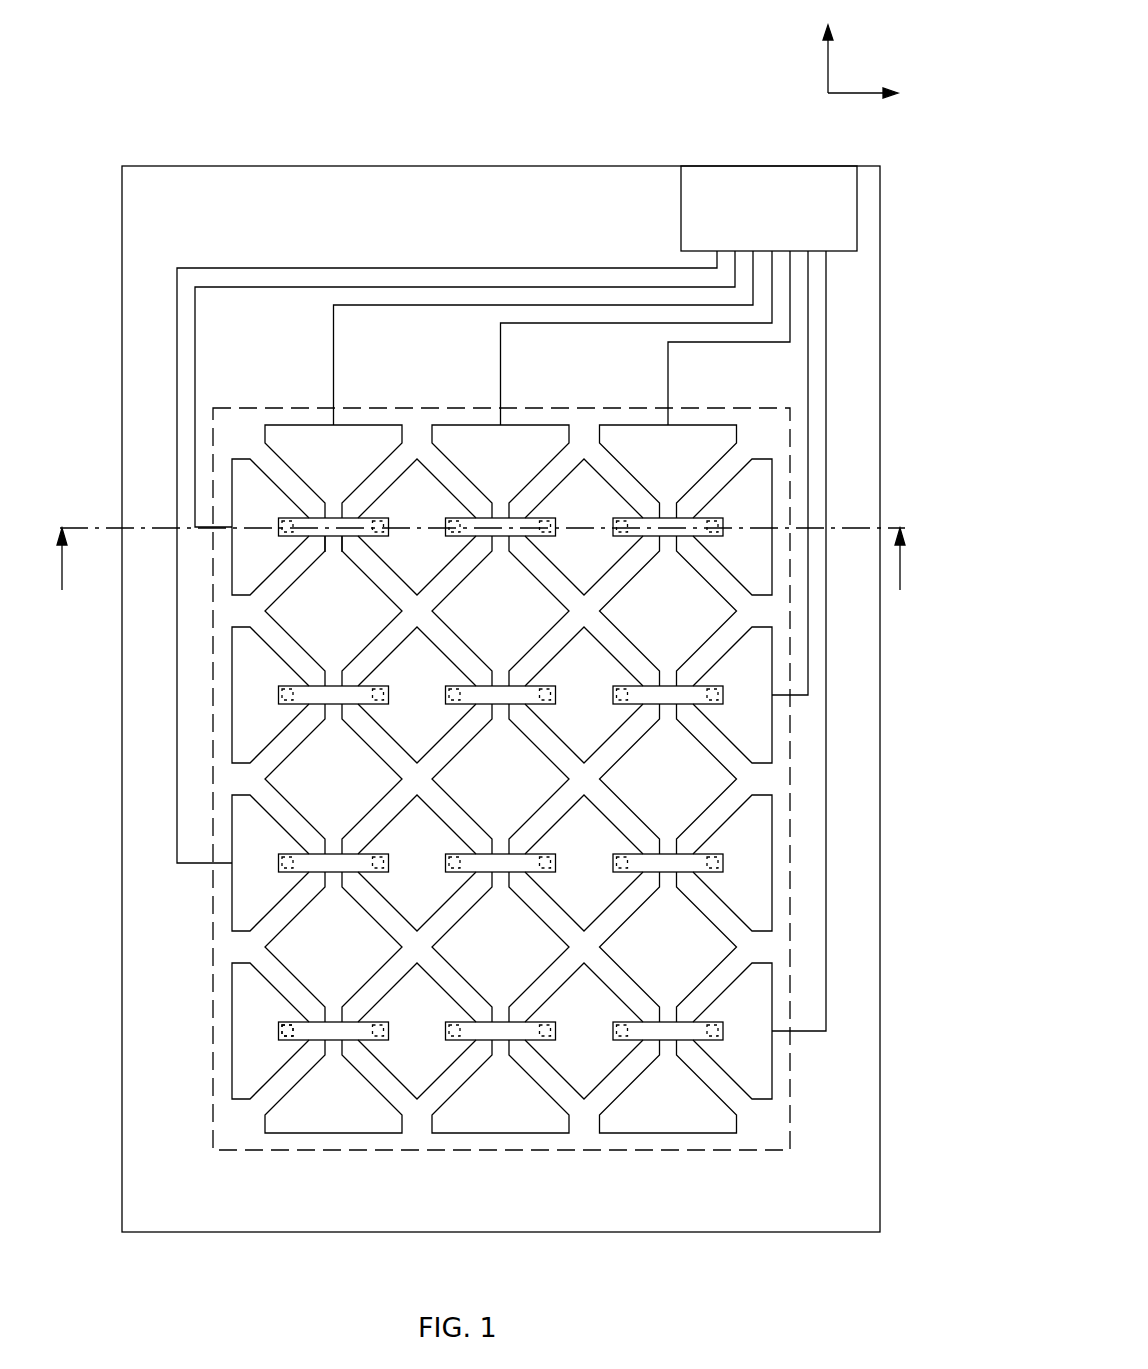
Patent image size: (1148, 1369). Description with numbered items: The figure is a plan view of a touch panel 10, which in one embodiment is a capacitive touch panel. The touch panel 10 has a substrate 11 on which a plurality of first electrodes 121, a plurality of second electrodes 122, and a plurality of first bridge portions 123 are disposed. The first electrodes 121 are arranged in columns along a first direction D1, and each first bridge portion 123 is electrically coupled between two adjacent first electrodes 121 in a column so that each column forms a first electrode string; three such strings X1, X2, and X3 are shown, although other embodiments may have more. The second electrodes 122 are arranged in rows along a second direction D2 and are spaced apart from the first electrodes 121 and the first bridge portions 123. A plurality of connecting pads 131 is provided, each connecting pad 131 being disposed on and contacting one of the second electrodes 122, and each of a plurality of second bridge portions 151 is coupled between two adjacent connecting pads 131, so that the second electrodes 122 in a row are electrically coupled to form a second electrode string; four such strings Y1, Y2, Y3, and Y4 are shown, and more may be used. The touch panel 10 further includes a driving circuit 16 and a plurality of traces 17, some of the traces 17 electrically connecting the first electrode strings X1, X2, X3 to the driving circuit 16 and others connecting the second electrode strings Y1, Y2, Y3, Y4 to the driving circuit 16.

The touch panel 10 is at (383, 78).
The substrate 11 is at (148, 228).
The driving circuit 16 is at (762, 190).
The traces 17 is at (193, 338).
The first electrodes 121 is at (417, 768).
The second electrodes 122 is at (583, 768).
The first bridge portions 123 is at (330, 540).
The connecting pads 131 is at (279, 1024).
The second bridge portions 151 is at (682, 1030).
The first electrode string X1 is at (326, 1103).
The first electrode string X2 is at (492, 1103).
The first electrode string X3 is at (660, 1103).
The second electrode string Y1 is at (748, 487).
The second electrode string Y2 is at (748, 737).
The second electrode string Y3 is at (748, 905).
The second electrode string Y4 is at (750, 1073).
The first direction D1 is at (849, 46).
The second direction D2 is at (887, 92).